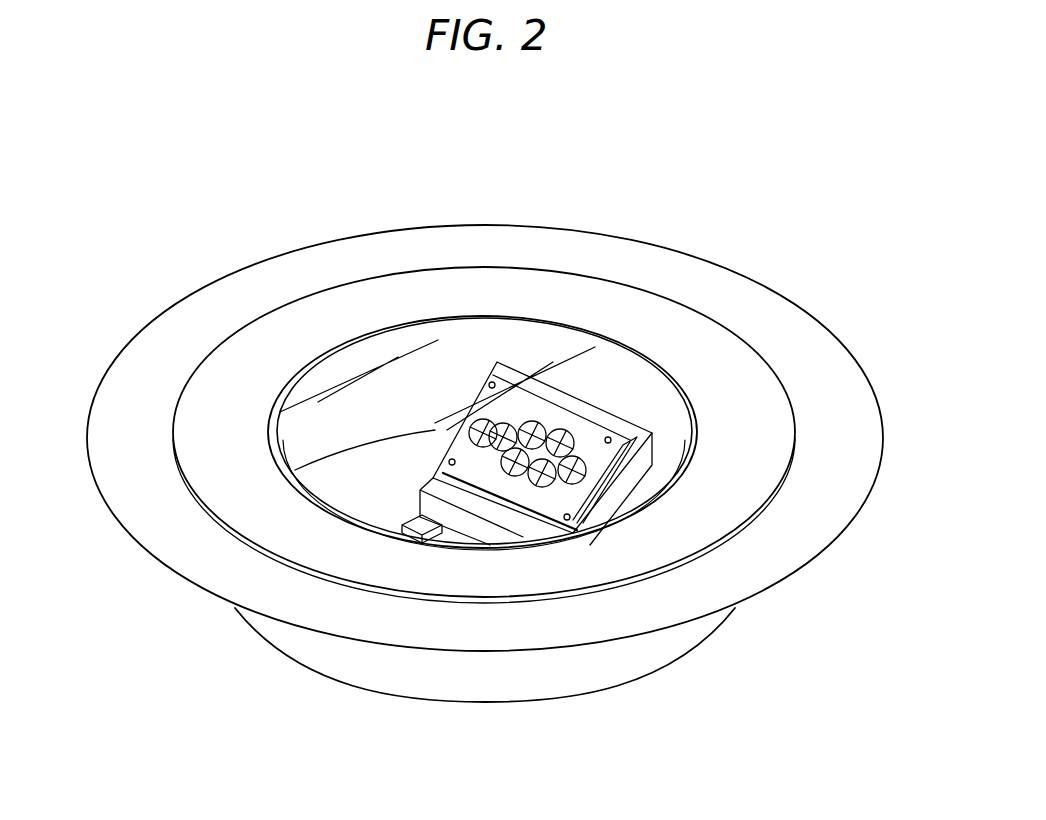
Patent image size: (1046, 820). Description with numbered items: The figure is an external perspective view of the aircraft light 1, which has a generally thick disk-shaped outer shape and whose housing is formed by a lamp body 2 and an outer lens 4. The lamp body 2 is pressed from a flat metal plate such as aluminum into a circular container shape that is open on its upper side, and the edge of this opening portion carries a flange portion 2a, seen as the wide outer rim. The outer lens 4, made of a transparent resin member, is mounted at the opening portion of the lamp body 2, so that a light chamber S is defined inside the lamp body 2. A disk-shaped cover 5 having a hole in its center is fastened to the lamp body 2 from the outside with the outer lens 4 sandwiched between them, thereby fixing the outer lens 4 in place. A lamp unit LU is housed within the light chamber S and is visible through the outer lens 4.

The aircraft light 1 is at (177, 246).
The lamp body 2 is at (638, 655).
The flange portion 2a is at (823, 485).
The outer lens 4 is at (652, 393).
The cover 5 is at (737, 398).
The lamp unit LU is at (597, 408).
The light chamber S is at (376, 488).